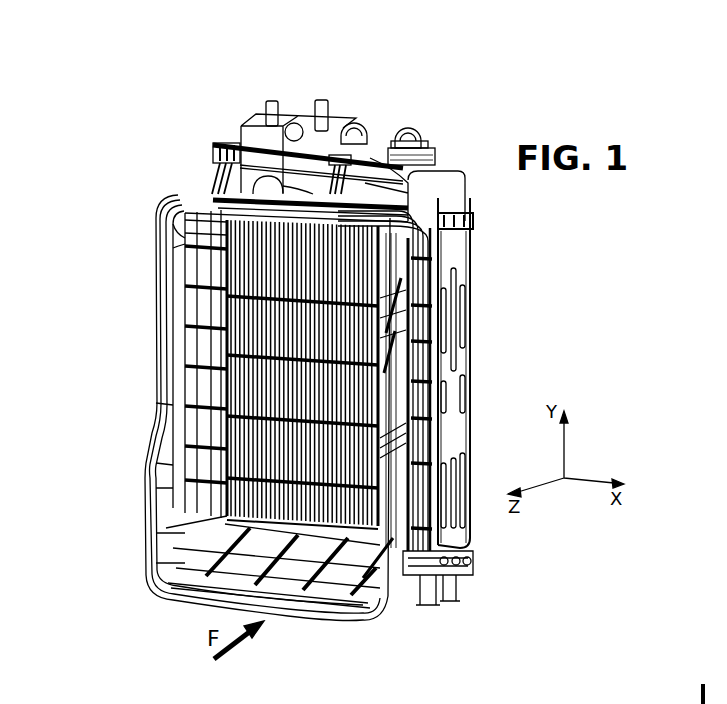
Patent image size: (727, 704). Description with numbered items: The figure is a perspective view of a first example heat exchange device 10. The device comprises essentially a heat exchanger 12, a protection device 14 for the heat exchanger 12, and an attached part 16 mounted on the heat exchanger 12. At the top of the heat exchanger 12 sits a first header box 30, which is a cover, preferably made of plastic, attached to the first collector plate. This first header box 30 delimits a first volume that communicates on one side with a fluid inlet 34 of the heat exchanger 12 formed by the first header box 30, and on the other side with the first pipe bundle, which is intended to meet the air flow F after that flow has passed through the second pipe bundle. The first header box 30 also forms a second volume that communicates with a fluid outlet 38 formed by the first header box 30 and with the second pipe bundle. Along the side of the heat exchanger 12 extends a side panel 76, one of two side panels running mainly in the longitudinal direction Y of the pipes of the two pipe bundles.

The heat exchange device 10 is at (140, 187).
The heat exchanger 12 is at (467, 350).
The protection device 14 is at (230, 347).
The attached part 16 is at (142, 493).
The first header box 30 is at (403, 190).
The fluid inlet 34 is at (352, 112).
The fluid outlet 38 is at (383, 113).
The side panel 76 is at (447, 245).